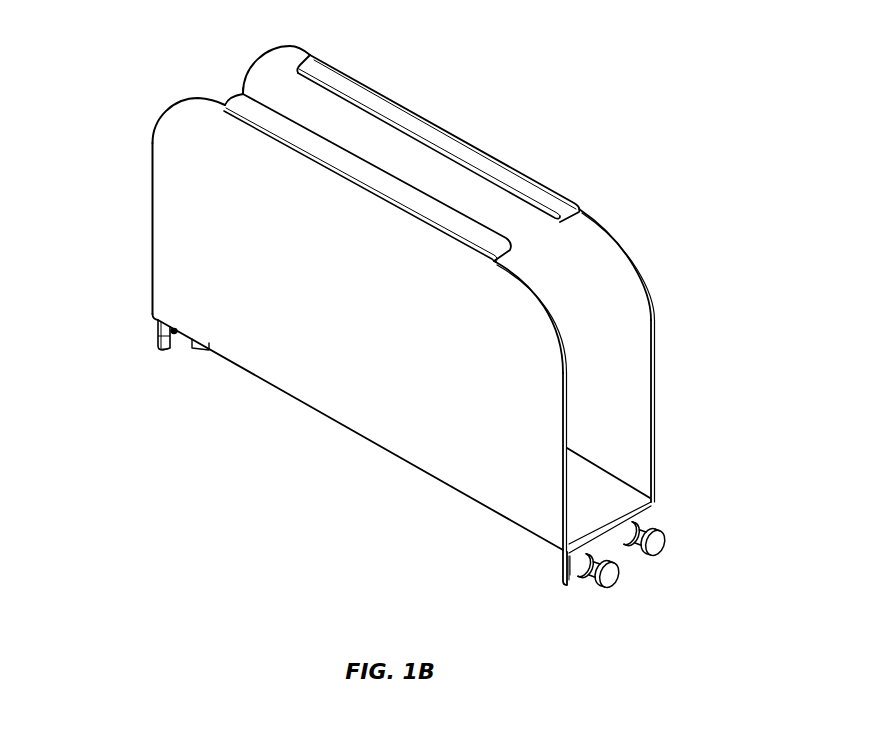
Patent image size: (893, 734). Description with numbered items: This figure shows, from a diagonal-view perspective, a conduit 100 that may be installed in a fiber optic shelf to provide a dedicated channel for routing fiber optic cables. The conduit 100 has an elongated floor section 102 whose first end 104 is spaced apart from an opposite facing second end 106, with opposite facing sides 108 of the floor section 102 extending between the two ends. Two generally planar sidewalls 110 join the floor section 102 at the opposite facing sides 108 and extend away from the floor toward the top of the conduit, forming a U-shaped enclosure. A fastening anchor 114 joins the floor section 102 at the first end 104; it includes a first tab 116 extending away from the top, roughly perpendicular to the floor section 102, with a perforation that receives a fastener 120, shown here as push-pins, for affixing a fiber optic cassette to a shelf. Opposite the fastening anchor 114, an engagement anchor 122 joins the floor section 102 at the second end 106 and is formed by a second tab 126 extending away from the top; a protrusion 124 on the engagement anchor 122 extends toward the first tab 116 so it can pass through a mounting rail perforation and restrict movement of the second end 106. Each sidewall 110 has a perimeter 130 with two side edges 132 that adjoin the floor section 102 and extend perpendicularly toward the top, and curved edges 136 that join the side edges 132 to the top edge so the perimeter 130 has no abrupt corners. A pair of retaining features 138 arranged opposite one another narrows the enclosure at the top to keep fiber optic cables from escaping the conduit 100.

The conduit 100 is at (575, 100).
The floor section 102 is at (610, 498).
The first end 104 is at (563, 584).
The second end 106 is at (156, 323).
The opposite facing sides 108 is at (617, 475).
The sidewalls 110 is at (500, 303).
The fastening anchor 114 is at (576, 598).
The first tab 116 is at (615, 548).
The fastener 120 is at (662, 549).
The engagement anchor 122 is at (170, 373).
The protrusion 124 is at (195, 348).
The second tab 126 is at (158, 343).
The perimeter 130 is at (360, 190).
The side edges 132 is at (153, 218).
The curved edges 136 is at (167, 110).
The retaining features 138 is at (160, 243).